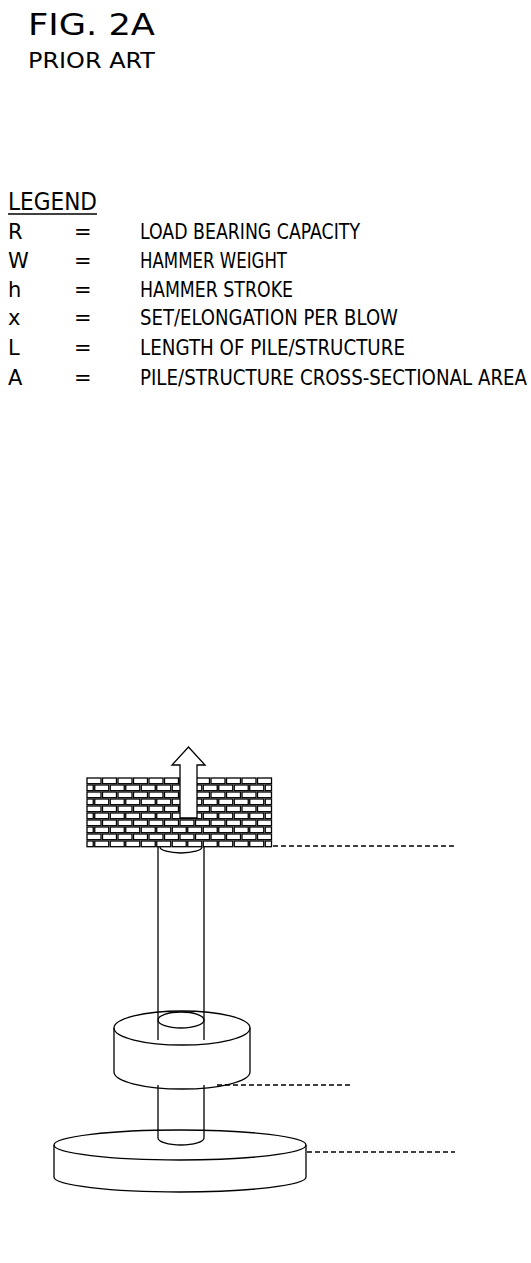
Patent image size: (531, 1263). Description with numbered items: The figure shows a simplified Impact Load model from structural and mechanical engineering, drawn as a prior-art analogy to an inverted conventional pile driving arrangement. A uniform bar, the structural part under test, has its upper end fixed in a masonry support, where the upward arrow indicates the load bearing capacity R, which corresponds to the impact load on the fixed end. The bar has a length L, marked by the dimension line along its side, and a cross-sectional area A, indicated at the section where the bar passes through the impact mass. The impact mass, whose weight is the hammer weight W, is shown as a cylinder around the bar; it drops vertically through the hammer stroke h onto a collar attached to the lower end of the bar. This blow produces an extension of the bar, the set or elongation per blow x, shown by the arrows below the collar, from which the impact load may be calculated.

The load bearing capacity R is at (188, 768).
The hammer weight W is at (235, 1040).
The hammer stroke h is at (349, 1086).
The set/elongation per blow x is at (338, 1165).
The length of pile/structure L is at (442, 866).
The pile/structure cross-sectional area A is at (203, 995).